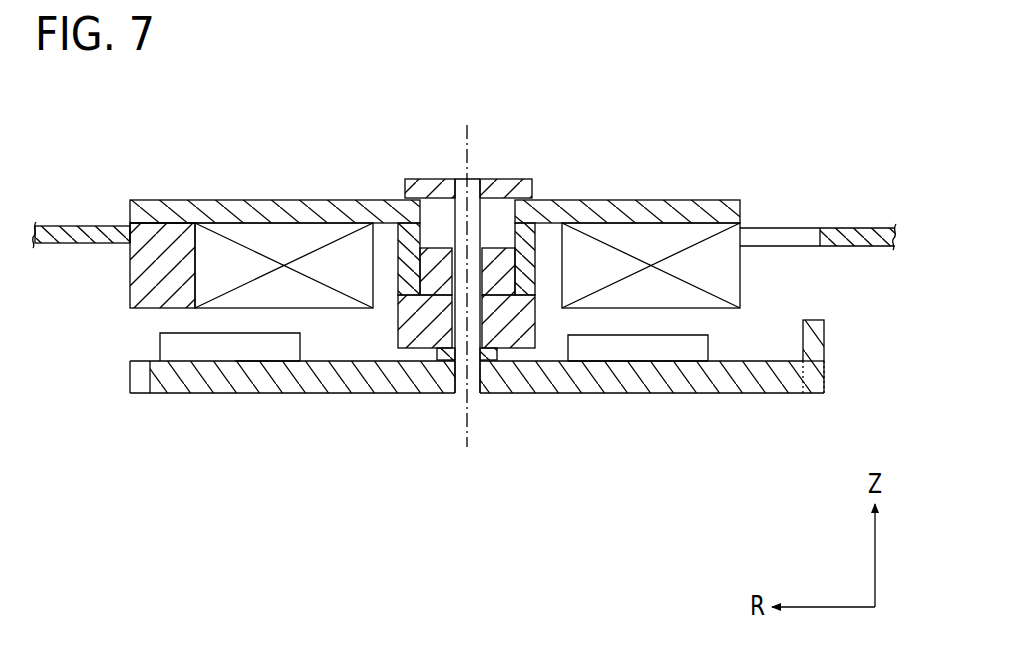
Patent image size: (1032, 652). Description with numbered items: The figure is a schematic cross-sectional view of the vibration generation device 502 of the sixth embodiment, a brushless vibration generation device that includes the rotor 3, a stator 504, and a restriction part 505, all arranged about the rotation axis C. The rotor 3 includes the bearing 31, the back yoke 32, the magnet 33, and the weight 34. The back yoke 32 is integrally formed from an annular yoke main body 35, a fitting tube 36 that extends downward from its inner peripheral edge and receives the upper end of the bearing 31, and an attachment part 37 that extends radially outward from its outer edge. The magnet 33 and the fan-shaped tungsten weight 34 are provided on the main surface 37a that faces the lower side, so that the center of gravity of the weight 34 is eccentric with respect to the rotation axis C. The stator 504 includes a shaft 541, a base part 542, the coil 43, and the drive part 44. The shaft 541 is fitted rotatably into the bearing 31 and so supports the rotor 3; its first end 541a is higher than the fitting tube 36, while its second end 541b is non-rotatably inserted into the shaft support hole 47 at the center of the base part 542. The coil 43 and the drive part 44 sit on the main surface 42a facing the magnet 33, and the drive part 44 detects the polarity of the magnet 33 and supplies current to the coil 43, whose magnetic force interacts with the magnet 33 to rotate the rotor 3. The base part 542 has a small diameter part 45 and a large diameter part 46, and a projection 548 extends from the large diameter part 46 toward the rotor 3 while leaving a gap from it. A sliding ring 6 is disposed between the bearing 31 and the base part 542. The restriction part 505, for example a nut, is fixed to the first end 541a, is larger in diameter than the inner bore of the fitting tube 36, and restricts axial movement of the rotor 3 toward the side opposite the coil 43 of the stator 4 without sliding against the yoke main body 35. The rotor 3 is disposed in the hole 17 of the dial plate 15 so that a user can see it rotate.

The rotor 3 is at (750, 268).
The stator 4 is at (719, 345).
The sliding ring 6 is at (495, 358).
The dial plate 15 is at (78, 226).
The hole 17 is at (120, 226).
The bearing 31 is at (532, 324).
The back yoke 32 is at (664, 208).
The magnet 33 is at (200, 265).
The weight 34 is at (143, 263).
The yoke main body 35 is at (678, 207).
The fitting tube 36 is at (532, 267).
The attachment part 37 is at (165, 213).
The main surface 37a is at (168, 232).
The main surface 42a is at (264, 352).
The coil 43 is at (167, 348).
The drive part 44 is at (640, 357).
The small diameter part 45 is at (147, 377).
The large diameter part 46 is at (813, 385).
The shaft support hole 47 is at (468, 373).
The vibration generation device 502 is at (689, 269).
The stator 504 is at (858, 382).
The restriction part 505 is at (428, 188).
The shaft 541 is at (456, 300).
The first end 541a is at (477, 179).
The second end 541b is at (460, 393).
The base part 542 is at (469, 419).
The projection 548 is at (817, 342).
The rotation axis C is at (465, 302).